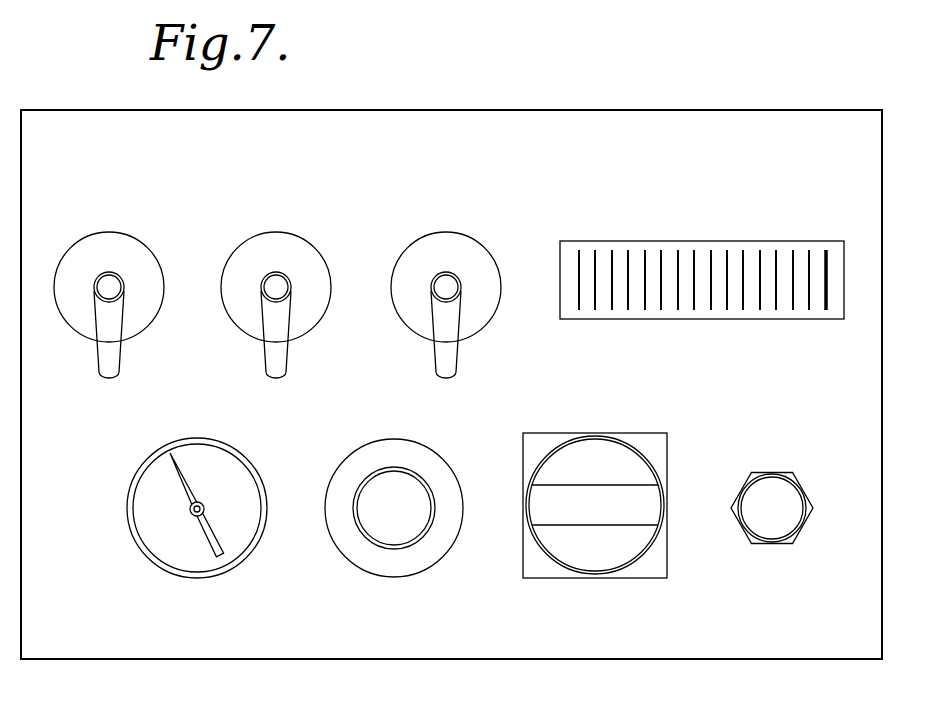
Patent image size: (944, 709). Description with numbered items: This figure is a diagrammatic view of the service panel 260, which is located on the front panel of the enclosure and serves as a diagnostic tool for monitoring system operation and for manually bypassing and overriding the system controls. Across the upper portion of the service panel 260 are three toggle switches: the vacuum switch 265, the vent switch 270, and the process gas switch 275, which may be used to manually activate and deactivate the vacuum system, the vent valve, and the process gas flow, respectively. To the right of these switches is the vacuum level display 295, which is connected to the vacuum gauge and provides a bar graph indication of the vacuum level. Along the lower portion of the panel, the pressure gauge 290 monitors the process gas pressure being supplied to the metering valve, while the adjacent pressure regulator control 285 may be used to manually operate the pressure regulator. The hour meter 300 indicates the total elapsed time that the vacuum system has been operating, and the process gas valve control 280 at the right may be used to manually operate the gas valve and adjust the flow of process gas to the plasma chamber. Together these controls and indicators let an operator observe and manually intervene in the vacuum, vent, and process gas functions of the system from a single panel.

The service panel 260 is at (690, 110).
The vacuum switch 265 is at (108, 327).
The vent switch 270 is at (275, 330).
The process gas switch 275 is at (448, 325).
The process gas valve control 280 is at (767, 483).
The pressure regulator control 285 is at (362, 562).
The pressure gauge 290 is at (150, 562).
The vacuum level display 295 is at (692, 241).
The hour meter 300 is at (600, 563).